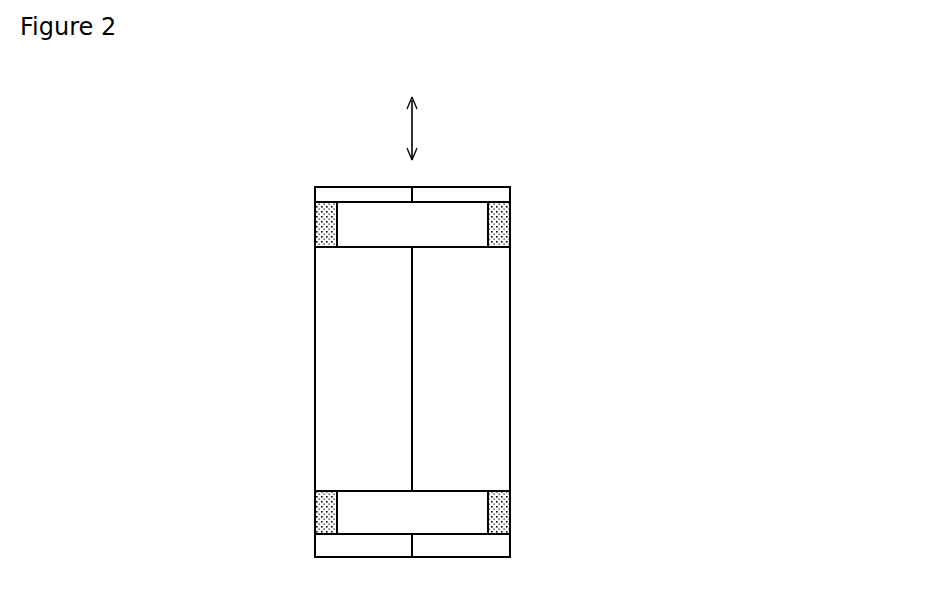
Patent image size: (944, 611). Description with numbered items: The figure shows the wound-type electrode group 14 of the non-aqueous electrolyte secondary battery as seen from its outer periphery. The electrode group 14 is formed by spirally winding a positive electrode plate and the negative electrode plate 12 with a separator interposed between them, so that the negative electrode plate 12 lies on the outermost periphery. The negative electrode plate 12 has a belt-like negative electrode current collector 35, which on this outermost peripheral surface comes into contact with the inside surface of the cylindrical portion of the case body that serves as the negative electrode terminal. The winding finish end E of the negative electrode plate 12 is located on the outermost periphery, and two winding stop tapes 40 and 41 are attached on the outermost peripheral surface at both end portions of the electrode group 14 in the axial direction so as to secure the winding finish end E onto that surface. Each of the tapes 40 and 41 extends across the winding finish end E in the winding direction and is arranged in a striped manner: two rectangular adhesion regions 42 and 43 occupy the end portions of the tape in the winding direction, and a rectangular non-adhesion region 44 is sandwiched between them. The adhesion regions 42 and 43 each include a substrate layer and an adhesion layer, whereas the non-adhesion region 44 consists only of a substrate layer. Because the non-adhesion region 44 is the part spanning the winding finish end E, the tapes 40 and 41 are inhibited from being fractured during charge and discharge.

The negative electrode plate 12 is at (482, 400).
The wound-type electrode group 14 is at (512, 335).
The negative electrode current collector 35 is at (355, 360).
The tape 40 is at (469, 249).
The tape 41 is at (465, 490).
The adhesion region 42 is at (325, 228).
The adhesion region 43 is at (497, 222).
The non-adhesion region 44 is at (460, 212).
The winding finish end E is at (413, 348).